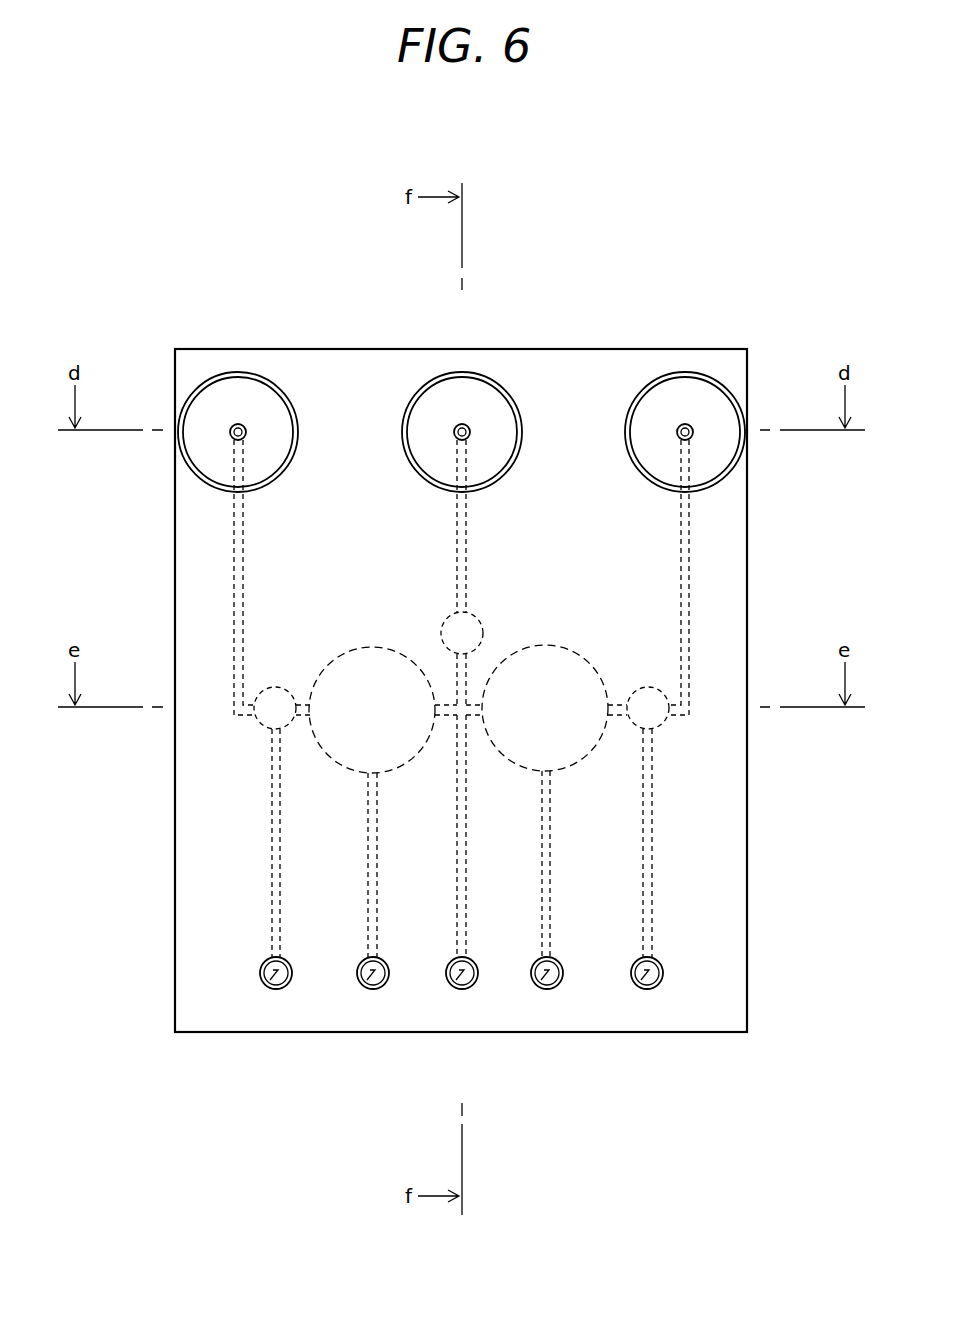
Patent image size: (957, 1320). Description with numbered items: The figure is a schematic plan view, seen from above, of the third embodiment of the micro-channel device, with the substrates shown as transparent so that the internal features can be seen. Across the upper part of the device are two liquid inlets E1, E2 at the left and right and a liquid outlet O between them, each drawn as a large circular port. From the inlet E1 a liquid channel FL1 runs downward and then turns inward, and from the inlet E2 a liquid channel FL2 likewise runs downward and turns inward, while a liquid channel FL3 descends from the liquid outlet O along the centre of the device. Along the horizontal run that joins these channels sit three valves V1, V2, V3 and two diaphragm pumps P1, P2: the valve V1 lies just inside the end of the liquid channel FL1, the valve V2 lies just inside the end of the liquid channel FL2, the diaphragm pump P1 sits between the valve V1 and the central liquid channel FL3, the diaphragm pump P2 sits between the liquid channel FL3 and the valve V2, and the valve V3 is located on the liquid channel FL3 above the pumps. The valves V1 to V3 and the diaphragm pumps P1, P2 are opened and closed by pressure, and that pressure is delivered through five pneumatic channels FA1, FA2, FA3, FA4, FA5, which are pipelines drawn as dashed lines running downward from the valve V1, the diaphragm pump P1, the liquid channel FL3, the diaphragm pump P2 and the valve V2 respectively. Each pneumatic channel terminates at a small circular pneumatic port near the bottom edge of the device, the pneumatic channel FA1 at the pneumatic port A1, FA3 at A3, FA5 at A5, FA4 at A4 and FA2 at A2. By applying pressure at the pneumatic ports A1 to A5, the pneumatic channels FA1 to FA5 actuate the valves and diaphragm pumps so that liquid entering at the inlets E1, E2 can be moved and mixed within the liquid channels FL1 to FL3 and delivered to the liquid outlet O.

The liquid inlet E1 is at (238, 424).
The liquid inlet E2 is at (685, 424).
The liquid outlet O is at (462, 424).
The liquid channel FL1 is at (245, 553).
The liquid channel FL2 is at (681, 512).
The liquid channel FL3 is at (457, 518).
The valve V1 is at (278, 690).
The valve V2 is at (651, 690).
The valve V3 is at (480, 628).
The diaphragm pump P1 is at (371, 650).
The diaphragm pump P2 is at (575, 652).
The pneumatic channel FA1 is at (280, 862).
The pneumatic channel FA2 is at (652, 862).
The pneumatic channel FA3 is at (377, 862).
The pneumatic channel FA4 is at (550, 862).
The pneumatic channel FA5 is at (466, 862).
The pneumatic port A1 is at (268, 986).
The pneumatic port A2 is at (639, 986).
The pneumatic port A3 is at (365, 986).
The pneumatic port A4 is at (539, 986).
The pneumatic port A5 is at (454, 986).